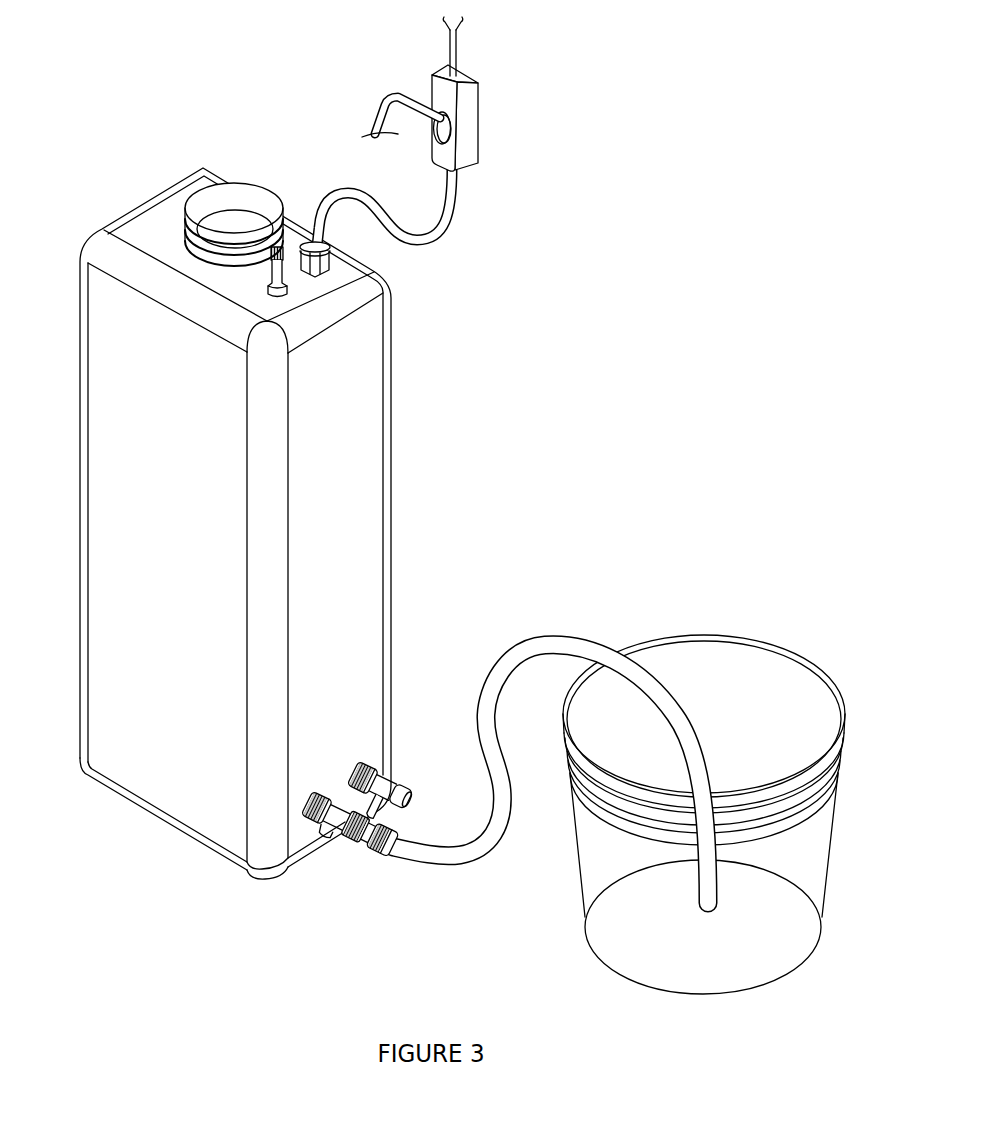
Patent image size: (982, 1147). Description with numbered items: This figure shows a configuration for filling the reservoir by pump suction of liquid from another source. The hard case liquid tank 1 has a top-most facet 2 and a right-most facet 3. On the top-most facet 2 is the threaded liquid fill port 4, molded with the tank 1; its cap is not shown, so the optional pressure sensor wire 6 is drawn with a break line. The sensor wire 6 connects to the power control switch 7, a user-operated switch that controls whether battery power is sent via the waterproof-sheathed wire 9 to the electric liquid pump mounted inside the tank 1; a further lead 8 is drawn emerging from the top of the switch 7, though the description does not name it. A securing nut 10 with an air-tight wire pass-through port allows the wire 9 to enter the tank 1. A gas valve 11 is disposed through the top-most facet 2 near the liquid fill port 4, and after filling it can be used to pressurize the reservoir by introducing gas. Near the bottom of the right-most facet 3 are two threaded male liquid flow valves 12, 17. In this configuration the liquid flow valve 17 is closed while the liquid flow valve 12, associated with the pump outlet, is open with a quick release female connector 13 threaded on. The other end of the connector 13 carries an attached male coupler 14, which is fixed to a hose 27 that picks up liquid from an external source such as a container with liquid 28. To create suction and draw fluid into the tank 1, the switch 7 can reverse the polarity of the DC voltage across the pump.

The hard case liquid tank 1 is at (150, 198).
The top-most facet 2 is at (235, 283).
The right-most facet 3 is at (295, 607).
The liquid fill port 4 is at (202, 263).
The electrical sensor wire 6 is at (398, 92).
The power control switch 7 is at (480, 100).
The power cord 8 is at (458, 50).
The wire 9 is at (458, 212).
The securing nut 10 is at (330, 251).
The gas valve 11 is at (268, 296).
The liquid flow valve 12 is at (309, 789).
The quick release female connector 13 is at (347, 838).
The male coupler 14 is at (378, 853).
The liquid flow valve 17 is at (362, 760).
The hose 27 is at (546, 636).
The container with liquid 28 is at (694, 660).